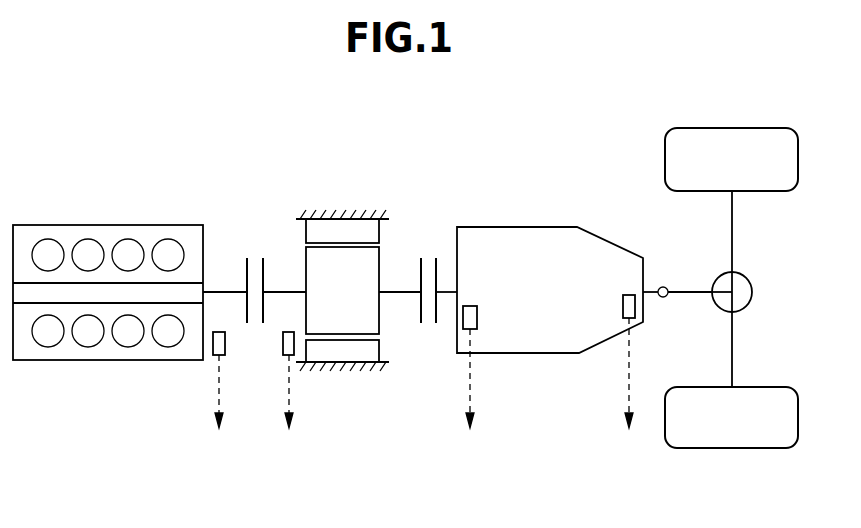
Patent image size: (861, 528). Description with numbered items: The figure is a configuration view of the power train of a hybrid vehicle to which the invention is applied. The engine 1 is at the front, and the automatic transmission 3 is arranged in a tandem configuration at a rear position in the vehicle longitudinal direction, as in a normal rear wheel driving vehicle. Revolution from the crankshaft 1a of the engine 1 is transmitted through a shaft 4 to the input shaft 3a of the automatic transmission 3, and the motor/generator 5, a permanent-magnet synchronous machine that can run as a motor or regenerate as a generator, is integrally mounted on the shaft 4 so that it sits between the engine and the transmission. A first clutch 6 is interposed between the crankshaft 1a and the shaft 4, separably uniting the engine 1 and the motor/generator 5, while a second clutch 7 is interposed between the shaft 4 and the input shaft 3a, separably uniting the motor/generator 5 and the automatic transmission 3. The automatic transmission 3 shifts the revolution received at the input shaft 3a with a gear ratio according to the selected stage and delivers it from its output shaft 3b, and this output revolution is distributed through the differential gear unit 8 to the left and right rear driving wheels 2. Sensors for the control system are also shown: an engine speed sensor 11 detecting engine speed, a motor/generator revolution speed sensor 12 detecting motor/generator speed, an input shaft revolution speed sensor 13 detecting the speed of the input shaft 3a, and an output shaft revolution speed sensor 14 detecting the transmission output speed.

The engine 1 is at (64, 212).
The crankshaft 1a is at (229, 288).
The driving wheels 2 is at (760, 128).
The automatic transmission 3 is at (533, 212).
The input shaft 3a is at (447, 290).
The output shaft 3b is at (648, 288).
The shaft 4 is at (398, 290).
The motor/generator 5 is at (329, 200).
The first clutch 6 is at (251, 246).
The second clutch 7 is at (427, 338).
The differential gear unit 8 is at (752, 292).
The engine speed sensor 11 is at (213, 357).
The motor/generator revolution speed sensor 12 is at (287, 357).
The input shaft revolution speed sensor 13 is at (472, 331).
The output shaft revolution speed sensor 14 is at (626, 320).